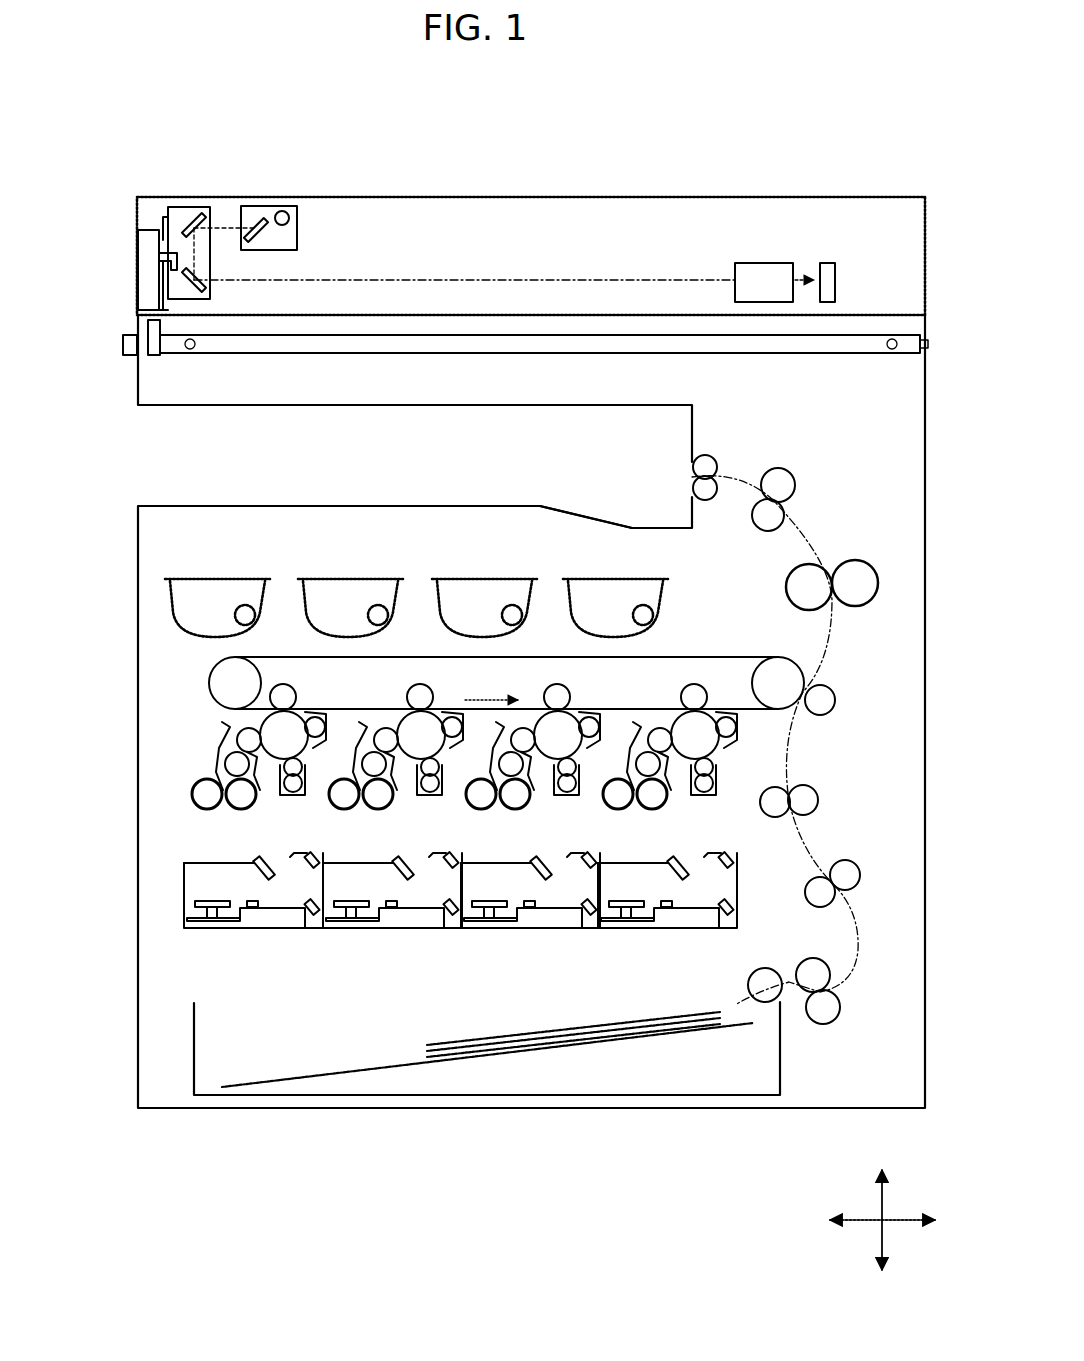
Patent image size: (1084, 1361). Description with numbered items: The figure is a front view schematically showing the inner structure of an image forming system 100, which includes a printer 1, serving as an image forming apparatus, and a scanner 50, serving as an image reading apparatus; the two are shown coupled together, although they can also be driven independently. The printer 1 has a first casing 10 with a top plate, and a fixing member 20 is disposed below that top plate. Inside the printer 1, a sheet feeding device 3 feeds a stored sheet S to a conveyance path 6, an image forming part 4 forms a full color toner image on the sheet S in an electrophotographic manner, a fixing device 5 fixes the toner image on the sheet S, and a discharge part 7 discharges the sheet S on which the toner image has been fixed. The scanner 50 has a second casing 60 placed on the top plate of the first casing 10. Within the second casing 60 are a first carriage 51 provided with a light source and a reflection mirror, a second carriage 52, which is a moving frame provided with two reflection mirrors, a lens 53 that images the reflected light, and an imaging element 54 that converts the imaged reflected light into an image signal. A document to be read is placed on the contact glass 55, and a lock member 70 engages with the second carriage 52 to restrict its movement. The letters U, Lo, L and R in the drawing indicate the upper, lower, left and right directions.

The image forming system 100 is at (160, 137).
The printer 1 is at (120, 390).
The scanner 50 is at (120, 275).
The contact glass 55 is at (632, 197).
The first carriage 51 is at (297, 232).
The second carriage 52 is at (210, 265).
The lens 53 is at (765, 262).
The imaging element 54 is at (828, 262).
The second casing 60 is at (137, 197).
The lock member 70 is at (150, 232).
The fixing member 20 is at (725, 353).
The first casing 10 is at (137, 542).
The discharge part 7 is at (540, 506).
The image forming part 4 is at (157, 660).
The fixing device 5 is at (848, 550).
The conveyance path 6 is at (855, 922).
The sheet feeding device 3 is at (190, 1047).
The sheet S is at (503, 1035).